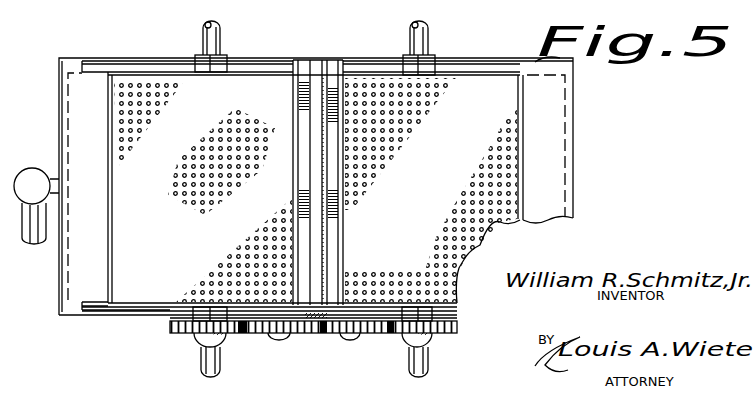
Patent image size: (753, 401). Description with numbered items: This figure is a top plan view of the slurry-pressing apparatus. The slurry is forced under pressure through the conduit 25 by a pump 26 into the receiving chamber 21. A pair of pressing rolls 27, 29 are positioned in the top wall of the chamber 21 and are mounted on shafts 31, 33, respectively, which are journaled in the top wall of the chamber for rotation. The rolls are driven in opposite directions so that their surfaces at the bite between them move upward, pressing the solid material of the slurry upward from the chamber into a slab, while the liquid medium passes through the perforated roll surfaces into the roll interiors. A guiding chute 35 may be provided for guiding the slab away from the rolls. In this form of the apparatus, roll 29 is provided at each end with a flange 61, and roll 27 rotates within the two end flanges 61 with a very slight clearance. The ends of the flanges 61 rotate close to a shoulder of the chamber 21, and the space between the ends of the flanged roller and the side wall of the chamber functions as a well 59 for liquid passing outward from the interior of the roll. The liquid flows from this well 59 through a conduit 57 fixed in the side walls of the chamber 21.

The receiving chamber 21 is at (455, 72).
The conduit 25 is at (23, 236).
The pump 26 is at (30, 168).
The pressing roll 27 is at (380, 80).
The pressing roll 29 is at (257, 78).
The shaft 31 is at (406, 340).
The shaft 33 is at (200, 337).
The guiding chute 35 is at (293, 113).
The conduit 57 is at (205, 36).
The well 59 is at (147, 311).
The flange 61 is at (110, 68).